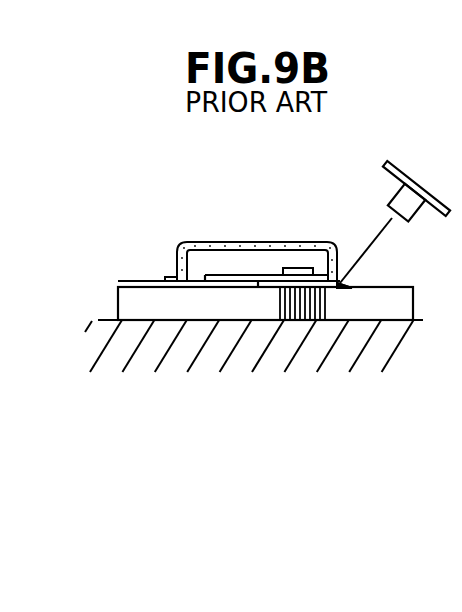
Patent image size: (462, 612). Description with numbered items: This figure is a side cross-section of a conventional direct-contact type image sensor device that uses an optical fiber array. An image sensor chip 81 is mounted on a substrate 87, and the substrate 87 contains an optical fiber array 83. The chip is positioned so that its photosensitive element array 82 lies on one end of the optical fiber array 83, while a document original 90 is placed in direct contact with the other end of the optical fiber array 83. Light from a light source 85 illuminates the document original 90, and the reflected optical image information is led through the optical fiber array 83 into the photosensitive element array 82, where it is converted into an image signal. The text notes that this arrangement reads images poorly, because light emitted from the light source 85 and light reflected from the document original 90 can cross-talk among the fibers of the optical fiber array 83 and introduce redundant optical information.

The image sensor chip 81 is at (215, 262).
The photosensitive element array 82 is at (295, 268).
The optical fiber array 83 is at (298, 323).
The light source 85 is at (402, 167).
The substrate 87 is at (130, 297).
The document original 90 is at (187, 352).